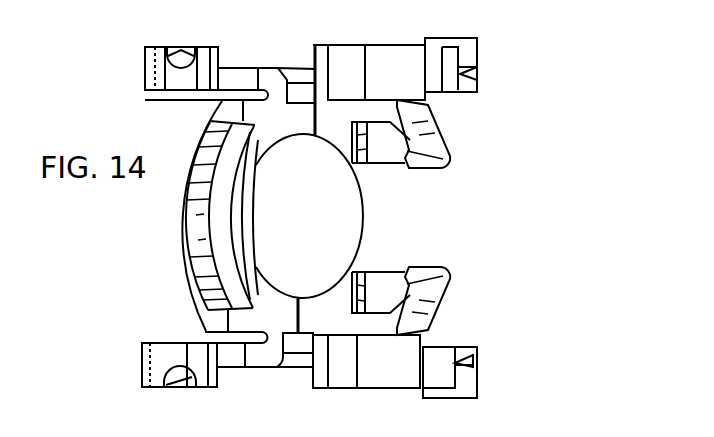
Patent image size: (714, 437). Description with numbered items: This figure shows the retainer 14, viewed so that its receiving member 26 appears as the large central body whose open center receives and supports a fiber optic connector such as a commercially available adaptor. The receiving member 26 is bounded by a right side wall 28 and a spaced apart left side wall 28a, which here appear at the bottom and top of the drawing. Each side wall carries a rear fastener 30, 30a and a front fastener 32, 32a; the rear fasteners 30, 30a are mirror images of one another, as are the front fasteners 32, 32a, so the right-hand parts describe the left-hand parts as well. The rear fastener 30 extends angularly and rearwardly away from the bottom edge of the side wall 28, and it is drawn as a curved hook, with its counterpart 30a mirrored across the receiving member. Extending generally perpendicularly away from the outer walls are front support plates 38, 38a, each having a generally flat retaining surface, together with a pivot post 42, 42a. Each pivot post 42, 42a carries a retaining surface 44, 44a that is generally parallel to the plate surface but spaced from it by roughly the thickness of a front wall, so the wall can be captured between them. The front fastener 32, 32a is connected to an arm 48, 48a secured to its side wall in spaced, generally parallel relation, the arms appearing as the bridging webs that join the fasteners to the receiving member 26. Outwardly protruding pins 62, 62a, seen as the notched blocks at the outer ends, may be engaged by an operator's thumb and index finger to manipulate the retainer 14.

The retainer 14 is at (468, 217).
The receiving member 26 is at (332, 146).
The right side wall 28 is at (216, 322).
The left side wall 28a is at (219, 108).
The rear fastener 30 is at (448, 338).
The rear fastener 30a is at (450, 97).
The front fastener 32 is at (143, 358).
The front fastener 32a is at (143, 90).
The front support plate 38 is at (386, 389).
The front support plate 38a is at (385, 44).
The pivot post 42 is at (458, 398).
The pivot post 42a is at (468, 37).
The retaining surface 44 is at (468, 380).
The retaining surface 44a is at (472, 57).
The arm 48 is at (260, 368).
The arm 48a is at (244, 67).
The pins 62 is at (164, 387).
The pins 62a is at (160, 46).